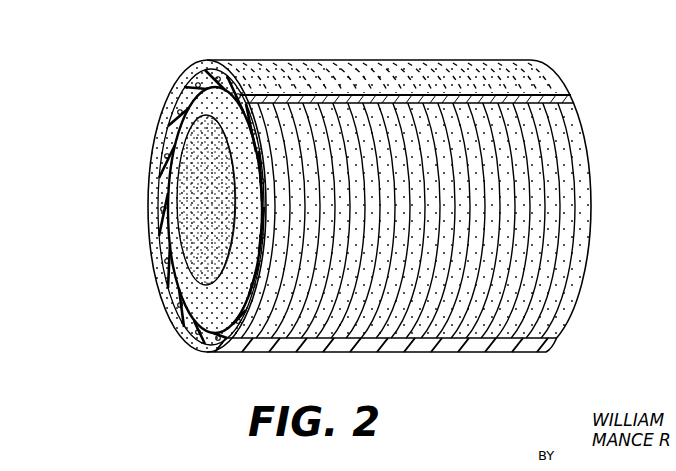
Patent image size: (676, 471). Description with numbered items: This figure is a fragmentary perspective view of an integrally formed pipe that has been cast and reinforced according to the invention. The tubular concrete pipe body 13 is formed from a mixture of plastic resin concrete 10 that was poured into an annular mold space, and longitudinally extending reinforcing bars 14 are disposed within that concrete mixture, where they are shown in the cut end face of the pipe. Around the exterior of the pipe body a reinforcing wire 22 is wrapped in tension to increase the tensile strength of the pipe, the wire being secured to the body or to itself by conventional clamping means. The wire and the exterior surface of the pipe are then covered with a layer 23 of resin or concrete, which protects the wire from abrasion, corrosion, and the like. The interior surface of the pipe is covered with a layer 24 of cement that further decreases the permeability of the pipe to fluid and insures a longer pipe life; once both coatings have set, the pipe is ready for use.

The mixture of plastic resin concrete 10 is at (172, 106).
The tubular concrete pipe body 13 is at (595, 170).
The longitudinally extending reinforcing bars 14 is at (150, 246).
The reinforcing wire 22 is at (570, 135).
The layer of resin or concrete 23 is at (215, 65).
The layer of cement 24 is at (180, 160).